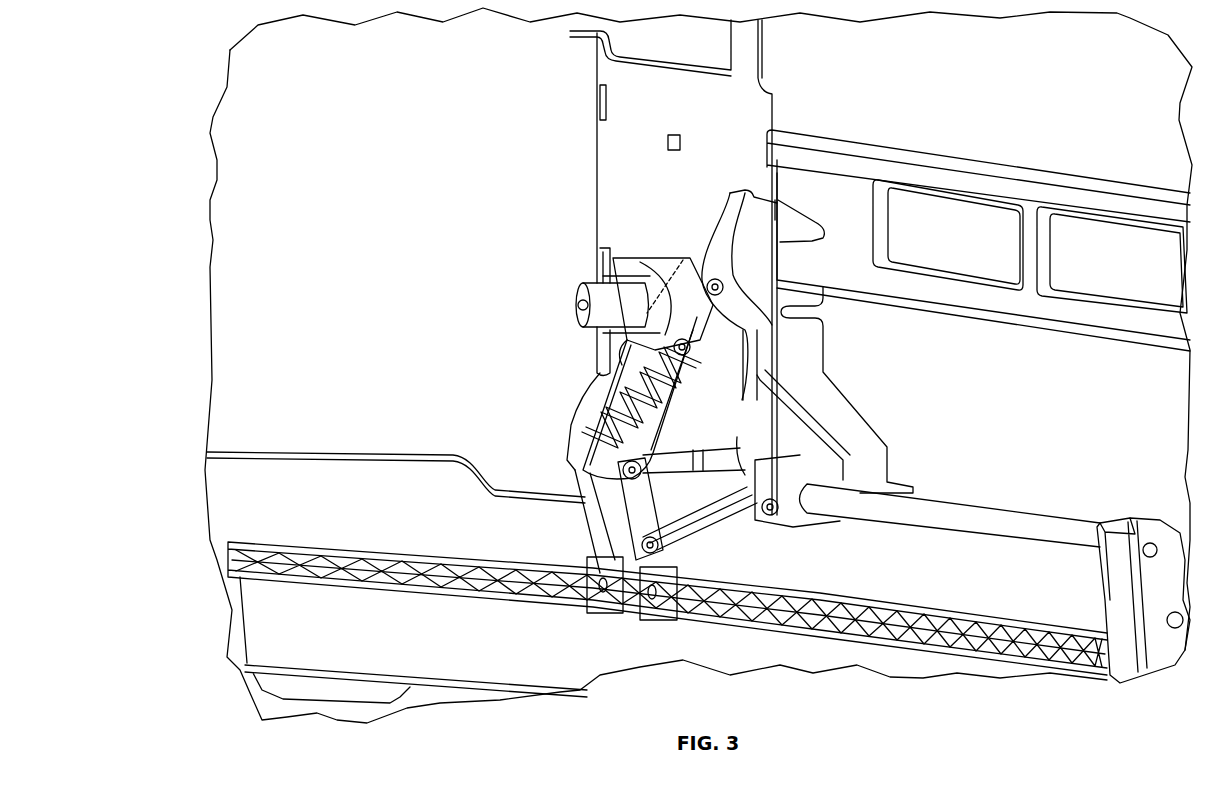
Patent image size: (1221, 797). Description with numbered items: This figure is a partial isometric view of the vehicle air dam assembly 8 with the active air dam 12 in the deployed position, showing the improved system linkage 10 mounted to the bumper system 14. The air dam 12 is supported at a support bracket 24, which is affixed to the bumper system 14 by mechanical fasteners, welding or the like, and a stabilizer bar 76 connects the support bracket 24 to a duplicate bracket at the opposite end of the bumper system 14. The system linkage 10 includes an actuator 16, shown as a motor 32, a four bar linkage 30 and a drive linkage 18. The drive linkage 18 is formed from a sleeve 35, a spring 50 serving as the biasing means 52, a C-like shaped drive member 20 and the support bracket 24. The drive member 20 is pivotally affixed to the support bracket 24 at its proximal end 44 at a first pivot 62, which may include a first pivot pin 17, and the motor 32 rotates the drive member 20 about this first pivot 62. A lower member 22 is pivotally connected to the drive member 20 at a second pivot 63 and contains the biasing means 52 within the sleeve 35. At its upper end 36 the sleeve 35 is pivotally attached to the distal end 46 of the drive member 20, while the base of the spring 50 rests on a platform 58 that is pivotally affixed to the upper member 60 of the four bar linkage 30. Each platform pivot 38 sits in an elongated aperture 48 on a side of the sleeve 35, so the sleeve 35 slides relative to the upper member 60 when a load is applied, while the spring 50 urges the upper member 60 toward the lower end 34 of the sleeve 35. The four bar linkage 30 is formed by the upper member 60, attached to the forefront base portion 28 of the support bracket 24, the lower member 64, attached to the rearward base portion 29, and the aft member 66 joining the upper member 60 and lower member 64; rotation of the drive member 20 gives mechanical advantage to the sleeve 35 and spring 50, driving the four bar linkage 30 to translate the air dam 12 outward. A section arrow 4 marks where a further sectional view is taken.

The section line 4 is at (915, 722).
The vehicle air dam assembly 8 is at (340, 370).
The system linkage 10 is at (486, 318).
The active air dam 12 is at (527, 660).
The bumper system 14 is at (735, 105).
The actuator 16 is at (578, 298).
The first pivot pin 17 is at (772, 250).
The drive linkage 18 is at (590, 352).
The drive member 20 is at (657, 267).
The lower member 22 is at (692, 350).
The support bracket 24 is at (823, 380).
The forefront base portion 28 is at (812, 508).
The rearward base portion 29 is at (780, 510).
The four bar linkage 30 is at (653, 560).
The motor 32 is at (631, 304).
The lower end 34 is at (612, 580).
The sleeve 35 is at (612, 385).
The upper end 36 is at (640, 272).
The platform pivot 38 is at (700, 520).
The proximal end 44 is at (698, 265).
The distal end 46 is at (652, 333).
The elongated aperture 48 is at (606, 420).
The spring 50 is at (827, 433).
The biasing means 52 is at (807, 412).
The platform 58 is at (600, 480).
The upper member 60 is at (815, 455).
The first pivot 62 is at (695, 268).
The second pivot 63 is at (735, 350).
The lower member 64 is at (705, 575).
The aft member 66 is at (585, 520).
The stabilizer bar 76 is at (988, 517).